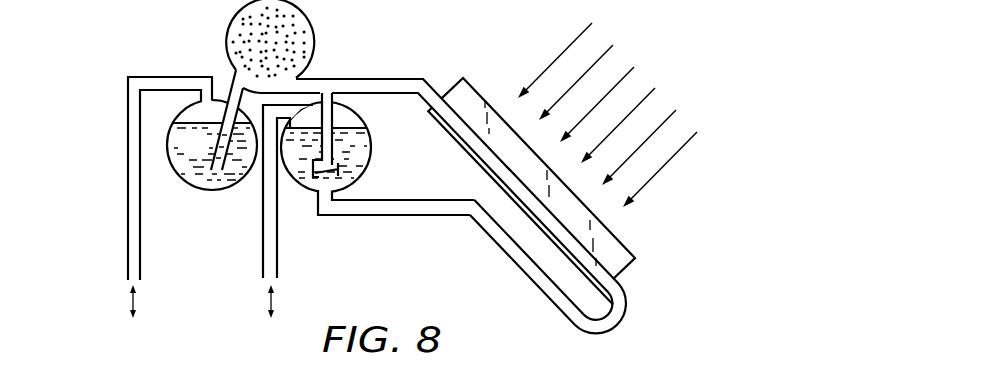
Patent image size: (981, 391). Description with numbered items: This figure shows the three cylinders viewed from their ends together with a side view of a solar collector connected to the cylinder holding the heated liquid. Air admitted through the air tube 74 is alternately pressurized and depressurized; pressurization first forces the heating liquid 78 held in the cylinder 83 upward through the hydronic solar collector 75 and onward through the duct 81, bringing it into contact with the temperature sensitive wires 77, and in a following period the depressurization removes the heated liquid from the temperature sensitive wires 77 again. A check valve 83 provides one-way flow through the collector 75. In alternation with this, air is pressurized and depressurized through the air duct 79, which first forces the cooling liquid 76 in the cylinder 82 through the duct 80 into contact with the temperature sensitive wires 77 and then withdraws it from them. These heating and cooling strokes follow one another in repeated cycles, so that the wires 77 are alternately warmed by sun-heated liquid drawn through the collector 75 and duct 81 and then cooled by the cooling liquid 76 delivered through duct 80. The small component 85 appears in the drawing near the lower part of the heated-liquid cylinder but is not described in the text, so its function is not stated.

The air tube 74 is at (278, 252).
The hydronic solar collector 75 is at (630, 252).
The cooling liquid 76 is at (187, 122).
The temperature sensitive wires 77 is at (287, 53).
The heating liquid 78 is at (350, 122).
The air duct 79 is at (141, 252).
The duct 80 is at (165, 77).
The duct 81 is at (431, 86).
The cylinder 82 is at (200, 188).
The cylinder 83 is at (312, 186).
The valve 85 is at (360, 172).